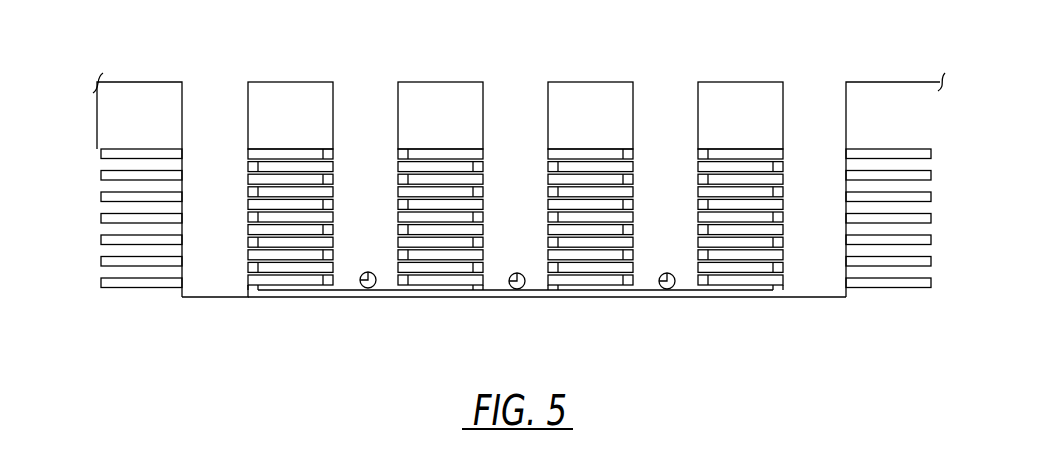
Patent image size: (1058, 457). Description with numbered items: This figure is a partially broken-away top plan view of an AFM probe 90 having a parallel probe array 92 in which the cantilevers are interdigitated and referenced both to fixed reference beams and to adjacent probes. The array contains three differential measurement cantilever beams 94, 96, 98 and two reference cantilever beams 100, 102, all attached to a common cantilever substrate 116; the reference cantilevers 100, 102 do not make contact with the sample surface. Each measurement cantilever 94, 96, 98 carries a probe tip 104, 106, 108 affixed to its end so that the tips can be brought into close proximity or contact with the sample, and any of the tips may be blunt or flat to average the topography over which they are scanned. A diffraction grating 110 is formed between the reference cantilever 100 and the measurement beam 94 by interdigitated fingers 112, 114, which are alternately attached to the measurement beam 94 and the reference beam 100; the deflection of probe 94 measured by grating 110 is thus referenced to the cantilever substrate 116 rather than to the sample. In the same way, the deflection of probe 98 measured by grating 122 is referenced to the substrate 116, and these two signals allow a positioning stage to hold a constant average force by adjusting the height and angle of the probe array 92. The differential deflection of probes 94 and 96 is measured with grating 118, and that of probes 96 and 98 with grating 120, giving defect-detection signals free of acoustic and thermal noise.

The AFM probe 90 is at (779, 62).
The parallel probe array 92 is at (358, 81).
The differential measurement cantilever beam 94 is at (342, 291).
The differential measurement cantilever beam 96 is at (501, 291).
The differential measurement cantilever beam 98 is at (651, 291).
The reference cantilever beam 100 is at (208, 302).
The reference cantilever beam 102 is at (827, 302).
The probe tip 104 is at (368, 288).
The probe tip 106 is at (518, 289).
The probe tip 108 is at (668, 289).
The diffraction grating 110 is at (287, 300).
The interdigitated finger 112 is at (335, 252).
The interdigitated finger 114 is at (253, 233).
The cantilever substrate 116 is at (158, 85).
The grating 118 is at (445, 300).
The grating 120 is at (595, 300).
The grating 122 is at (758, 300).